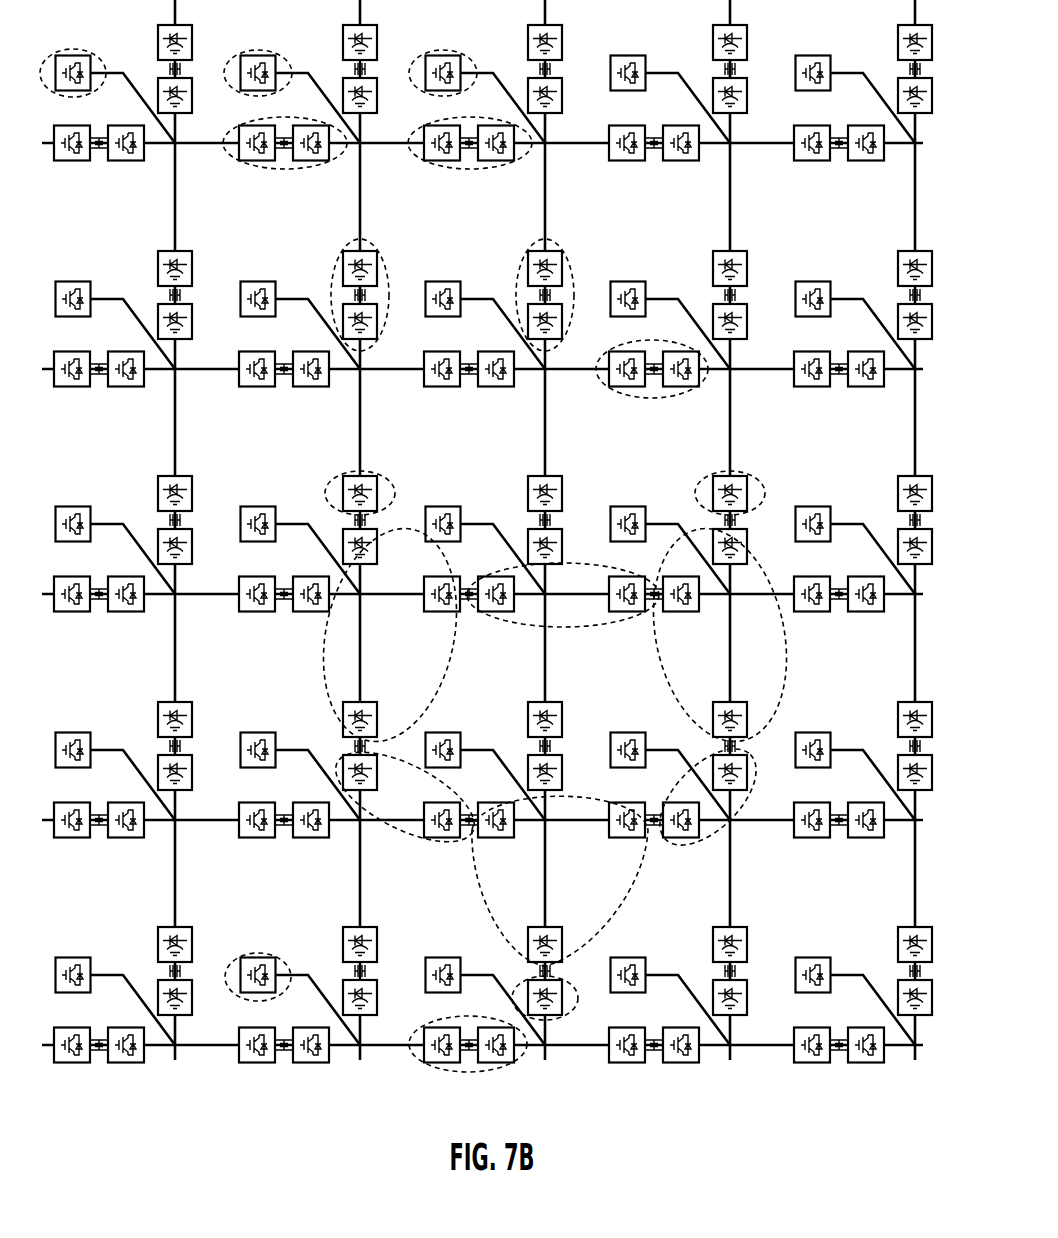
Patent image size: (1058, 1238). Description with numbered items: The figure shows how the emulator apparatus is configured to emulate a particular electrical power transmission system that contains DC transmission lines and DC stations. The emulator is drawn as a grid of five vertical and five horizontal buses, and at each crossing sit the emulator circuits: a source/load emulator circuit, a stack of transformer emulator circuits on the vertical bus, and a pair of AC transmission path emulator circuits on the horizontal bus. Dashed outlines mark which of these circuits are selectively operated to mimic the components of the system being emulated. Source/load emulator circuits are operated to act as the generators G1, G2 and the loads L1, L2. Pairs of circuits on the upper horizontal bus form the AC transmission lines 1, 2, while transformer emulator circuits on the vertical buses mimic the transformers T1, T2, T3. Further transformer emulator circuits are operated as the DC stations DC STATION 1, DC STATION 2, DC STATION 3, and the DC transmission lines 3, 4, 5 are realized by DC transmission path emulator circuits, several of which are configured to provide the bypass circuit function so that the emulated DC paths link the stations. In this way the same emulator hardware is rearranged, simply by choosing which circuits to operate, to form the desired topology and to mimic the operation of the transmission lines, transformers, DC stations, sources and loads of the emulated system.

The load L1 is at (73, 58).
The load L2 is at (258, 962).
The generator G1 is at (258, 59).
The generator G2 is at (443, 59).
The AC transmission line 1 is at (470, 161).
The AC transmission line 2 is at (285, 161).
The DC transmission line 3 is at (563, 595).
The DC transmission line 4 is at (405, 797).
The DC transmission line 5 is at (708, 797).
The transformer T1 is at (370, 295).
The transformer T2 is at (558, 295).
The transformer T3 is at (468, 1029).
The DC station DC STATION 1 is at (318, 478).
The DC station DC STATION 2 is at (679, 481).
The DC station DC STATION 3 is at (602, 1002).